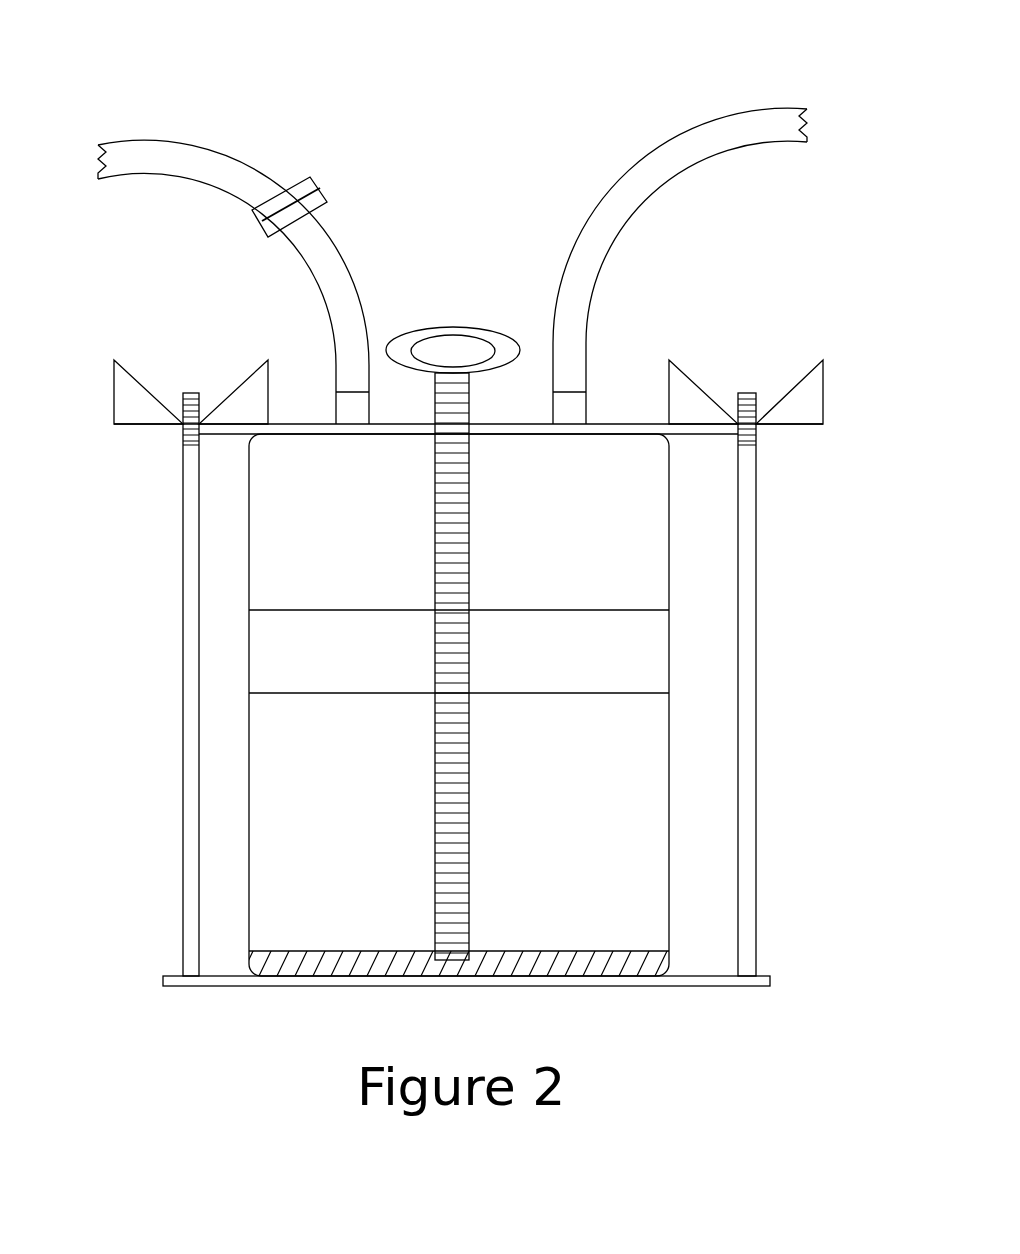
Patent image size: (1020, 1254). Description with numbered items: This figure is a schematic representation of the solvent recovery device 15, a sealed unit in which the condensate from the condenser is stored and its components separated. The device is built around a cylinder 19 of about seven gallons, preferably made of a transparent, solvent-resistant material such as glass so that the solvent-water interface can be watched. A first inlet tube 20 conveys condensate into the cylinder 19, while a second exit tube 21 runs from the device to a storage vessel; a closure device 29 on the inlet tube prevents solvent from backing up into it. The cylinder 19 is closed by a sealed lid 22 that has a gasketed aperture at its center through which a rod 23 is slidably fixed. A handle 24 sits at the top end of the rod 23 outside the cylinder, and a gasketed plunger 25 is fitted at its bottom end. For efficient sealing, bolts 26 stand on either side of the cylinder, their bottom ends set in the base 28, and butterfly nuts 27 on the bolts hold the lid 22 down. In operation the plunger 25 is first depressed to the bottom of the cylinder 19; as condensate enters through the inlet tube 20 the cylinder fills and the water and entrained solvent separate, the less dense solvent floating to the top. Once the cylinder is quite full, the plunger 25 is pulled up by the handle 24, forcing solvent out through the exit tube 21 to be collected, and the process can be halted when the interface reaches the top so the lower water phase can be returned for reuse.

The solvent recovery device 15 is at (479, 585).
The cylinder 19 is at (556, 706).
The first inlet tube 20 is at (233, 228).
The second exit tube 21 is at (680, 212).
The sealed lid 22 is at (468, 330).
The rod 23 is at (501, 666).
The handle 24 is at (453, 278).
The gasketed plunger 25 is at (529, 931).
The bolts 26 is at (469, 684).
The butterfly nuts 27 is at (479, 368).
The base 28 is at (426, 930).
The closure device 29 is at (314, 167).